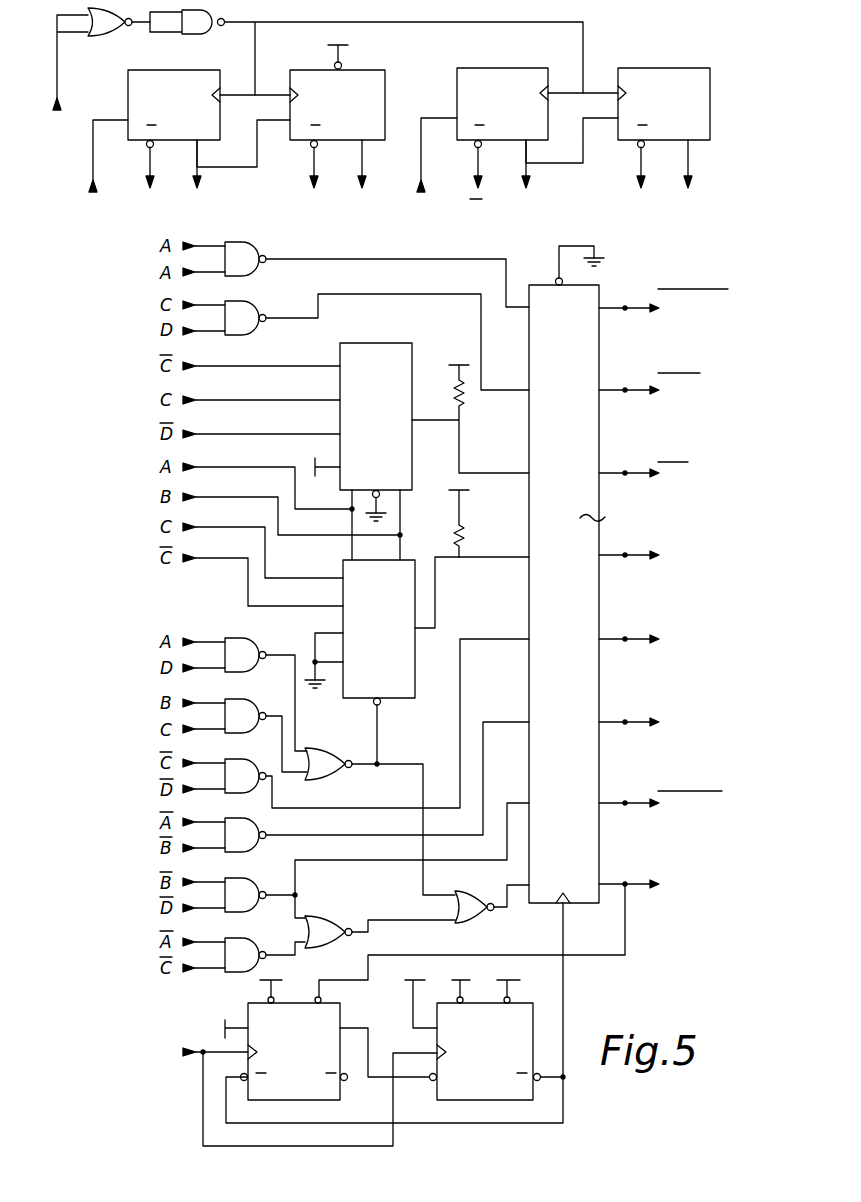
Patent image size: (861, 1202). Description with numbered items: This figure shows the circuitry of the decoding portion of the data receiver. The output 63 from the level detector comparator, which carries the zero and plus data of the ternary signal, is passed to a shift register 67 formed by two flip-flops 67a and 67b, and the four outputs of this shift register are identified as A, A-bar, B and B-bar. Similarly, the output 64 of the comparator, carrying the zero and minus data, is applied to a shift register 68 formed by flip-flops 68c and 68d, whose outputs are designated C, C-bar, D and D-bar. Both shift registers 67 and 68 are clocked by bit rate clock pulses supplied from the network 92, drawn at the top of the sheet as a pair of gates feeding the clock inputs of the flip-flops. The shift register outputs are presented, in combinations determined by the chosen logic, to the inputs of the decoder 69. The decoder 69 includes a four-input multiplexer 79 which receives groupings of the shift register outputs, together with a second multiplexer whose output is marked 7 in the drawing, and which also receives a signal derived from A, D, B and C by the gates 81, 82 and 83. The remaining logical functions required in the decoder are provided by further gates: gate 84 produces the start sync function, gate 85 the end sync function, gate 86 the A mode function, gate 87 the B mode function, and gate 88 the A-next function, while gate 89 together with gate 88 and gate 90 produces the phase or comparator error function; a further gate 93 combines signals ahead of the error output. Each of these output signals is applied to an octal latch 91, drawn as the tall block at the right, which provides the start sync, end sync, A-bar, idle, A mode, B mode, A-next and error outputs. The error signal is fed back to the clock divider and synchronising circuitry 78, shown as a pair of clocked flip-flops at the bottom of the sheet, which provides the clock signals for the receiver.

The network 92 is at (311, 71).
The flip-flop 68c is at (209, 145).
The flip-flop 68d is at (291, 132).
The shift register 68 is at (262, 197).
The output 64 is at (94, 157).
The output 63 is at (421, 155).
The flip-flop 67b is at (537, 144).
The flip-flop 67a is at (618, 144).
The shift register 67 is at (600, 197).
The decoder 69 is at (118, 418).
The gate 84 is at (356, 274).
The gate 85 is at (356, 342).
The 4-input multiplexer 79 is at (389, 377).
The multiplexer output 7 is at (356, 628).
The octal latch 91 is at (631, 574).
The gate 81 is at (245, 694).
The gate 82 is at (245, 735).
The gate 83 is at (380, 821).
The gate 86 is at (356, 723).
The gate 87 is at (356, 787).
The gate 88 is at (356, 860).
The gate 89 is at (244, 955).
The gate 90 is at (322, 926).
The NOR gate 93 is at (474, 916).
The clock divider and synchronising circuitry 78 is at (386, 1017).